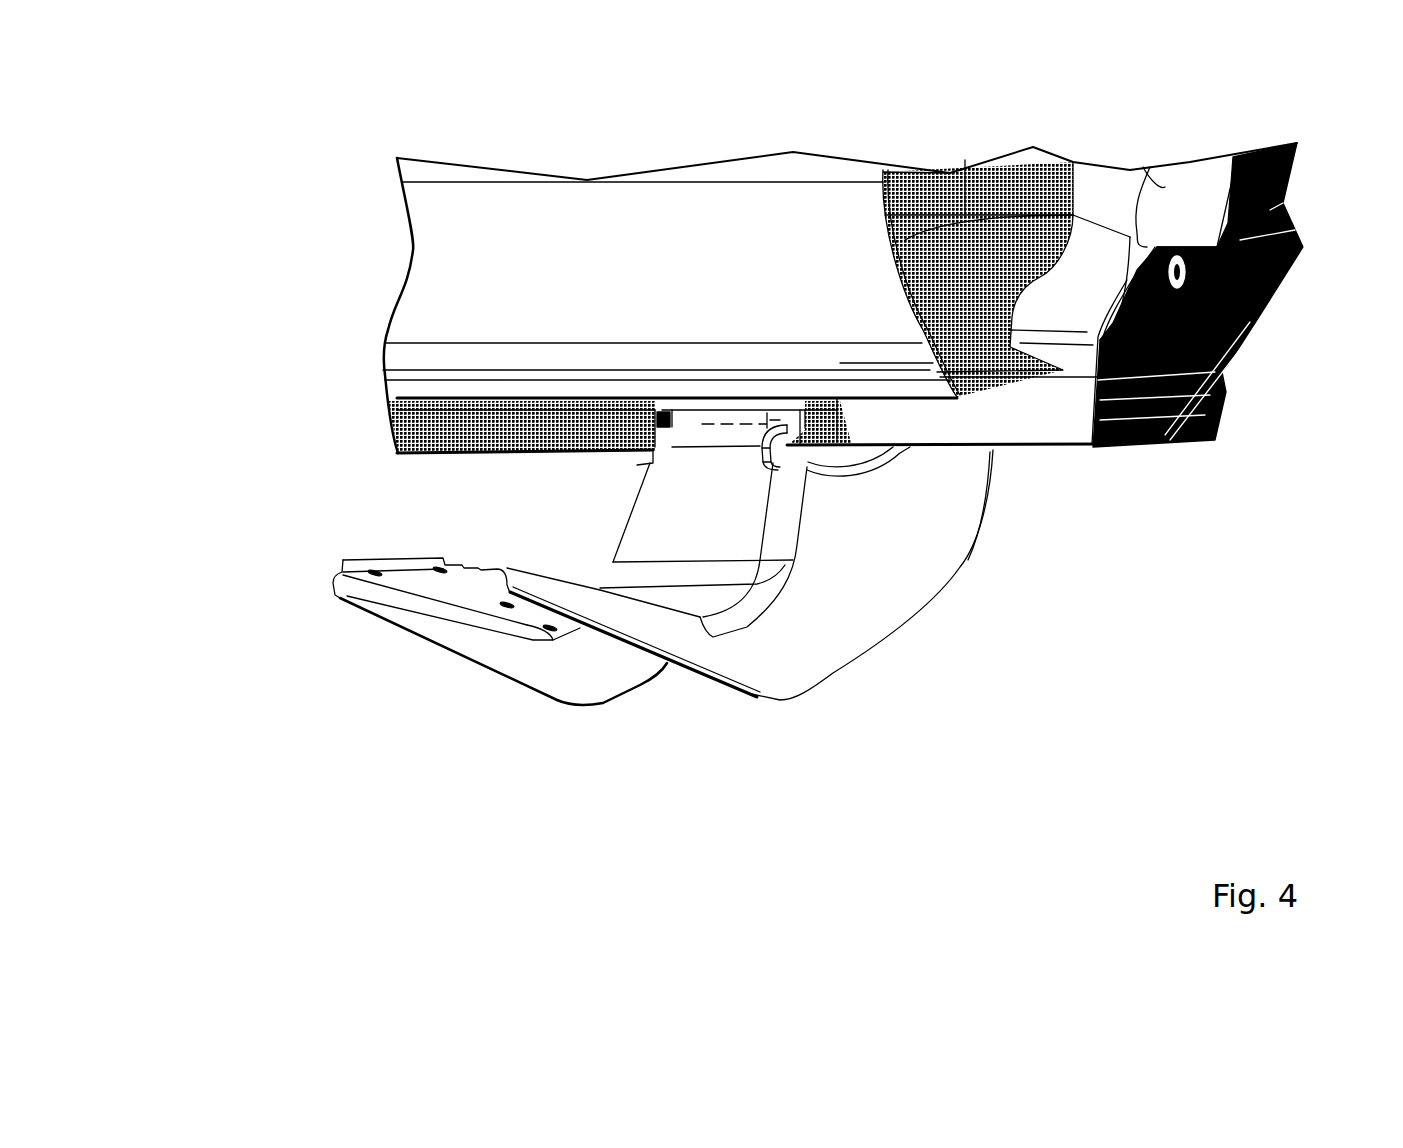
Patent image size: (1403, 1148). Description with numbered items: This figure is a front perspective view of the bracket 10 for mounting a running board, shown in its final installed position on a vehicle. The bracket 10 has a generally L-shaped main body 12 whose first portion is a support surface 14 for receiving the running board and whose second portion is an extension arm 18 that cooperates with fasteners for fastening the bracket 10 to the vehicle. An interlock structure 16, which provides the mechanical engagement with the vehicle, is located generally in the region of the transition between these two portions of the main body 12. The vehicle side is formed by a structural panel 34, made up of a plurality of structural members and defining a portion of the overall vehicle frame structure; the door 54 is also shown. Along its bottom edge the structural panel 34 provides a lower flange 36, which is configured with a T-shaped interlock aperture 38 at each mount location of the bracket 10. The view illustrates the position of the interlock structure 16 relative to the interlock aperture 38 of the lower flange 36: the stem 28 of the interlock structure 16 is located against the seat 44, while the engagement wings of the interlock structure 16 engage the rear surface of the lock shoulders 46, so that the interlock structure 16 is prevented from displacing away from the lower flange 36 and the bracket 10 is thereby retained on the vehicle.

The bracket 10 is at (325, 673).
The main body 12 is at (897, 605).
The support surface 14 is at (363, 557).
The interlock structure 16 is at (697, 425).
The extension arm 18 is at (975, 455).
The stem 28 is at (678, 432).
The structural panel 34 is at (1200, 200).
The lower flange 36 is at (447, 432).
The interlock aperture 38 is at (733, 423).
The seat 44 is at (773, 467).
The lock shoulders 46 is at (785, 427).
The door 54 is at (460, 230).